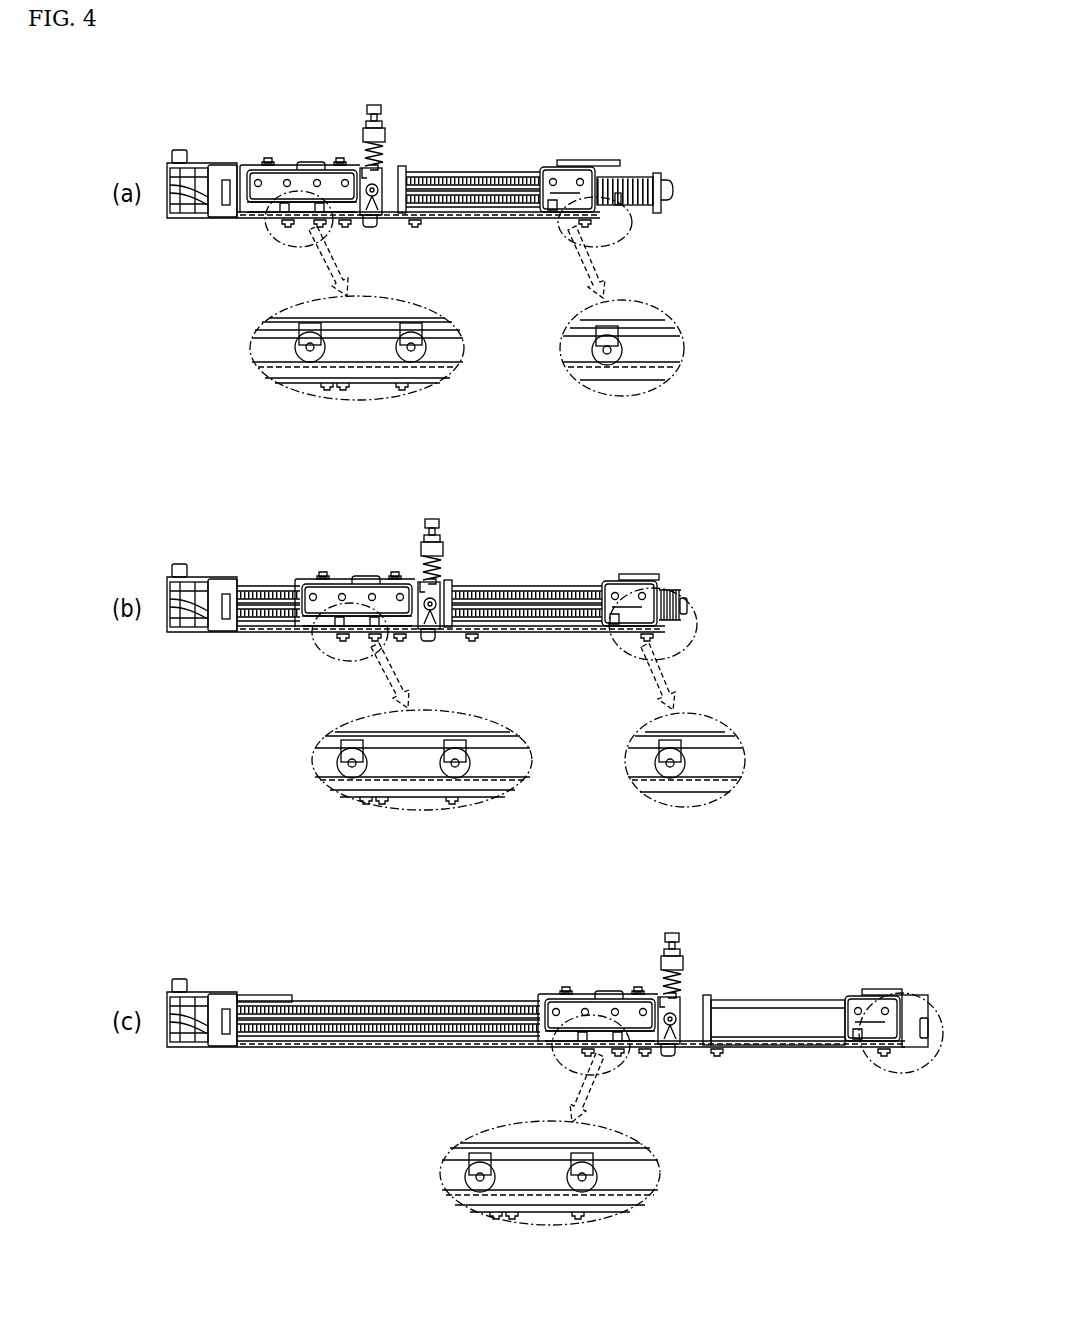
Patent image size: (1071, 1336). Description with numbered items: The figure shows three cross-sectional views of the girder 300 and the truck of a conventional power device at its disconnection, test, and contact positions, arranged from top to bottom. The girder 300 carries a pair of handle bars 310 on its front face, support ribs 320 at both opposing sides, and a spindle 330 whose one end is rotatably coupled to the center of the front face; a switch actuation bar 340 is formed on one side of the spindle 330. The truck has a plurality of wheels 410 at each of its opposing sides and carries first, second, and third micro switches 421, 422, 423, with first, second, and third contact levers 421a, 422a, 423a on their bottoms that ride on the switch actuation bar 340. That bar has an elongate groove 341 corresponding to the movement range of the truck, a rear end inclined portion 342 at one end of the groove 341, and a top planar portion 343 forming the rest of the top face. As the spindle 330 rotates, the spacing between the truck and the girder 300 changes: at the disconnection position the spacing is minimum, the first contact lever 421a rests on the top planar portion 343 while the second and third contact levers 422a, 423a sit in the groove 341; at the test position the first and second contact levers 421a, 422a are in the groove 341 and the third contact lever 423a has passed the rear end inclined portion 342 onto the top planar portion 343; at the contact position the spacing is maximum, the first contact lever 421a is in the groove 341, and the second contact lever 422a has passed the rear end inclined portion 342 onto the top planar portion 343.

The girder 300 is at (170, 1047).
The handle bars 310 is at (178, 979).
The support ribs 320 is at (228, 1014).
The spindle 330 is at (388, 1010).
The switch actuation bar 340 is at (251, 1047).
The groove 341 is at (512, 1192).
The rear end inclined portion 342 is at (642, 1202).
The top planar portion 343 is at (560, 1195).
The wheels 410 is at (910, 1058).
The first micro switch 421 is at (562, 1020).
The first contact lever 421a is at (468, 1190).
The second micro switch 422 is at (640, 1020).
The second contact lever 422a is at (590, 1192).
The third micro switch 423 is at (888, 1025).
The third contact lever 423a is at (688, 780).